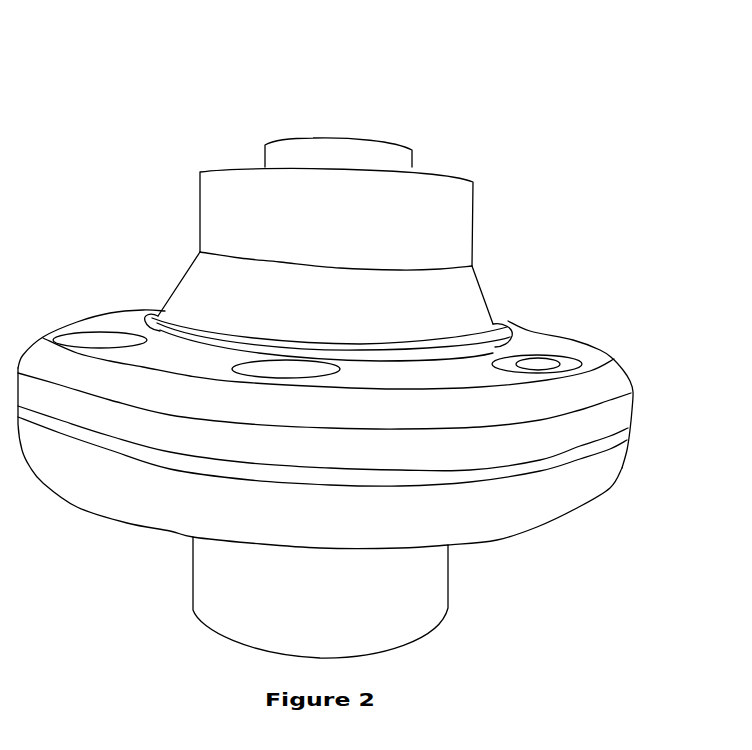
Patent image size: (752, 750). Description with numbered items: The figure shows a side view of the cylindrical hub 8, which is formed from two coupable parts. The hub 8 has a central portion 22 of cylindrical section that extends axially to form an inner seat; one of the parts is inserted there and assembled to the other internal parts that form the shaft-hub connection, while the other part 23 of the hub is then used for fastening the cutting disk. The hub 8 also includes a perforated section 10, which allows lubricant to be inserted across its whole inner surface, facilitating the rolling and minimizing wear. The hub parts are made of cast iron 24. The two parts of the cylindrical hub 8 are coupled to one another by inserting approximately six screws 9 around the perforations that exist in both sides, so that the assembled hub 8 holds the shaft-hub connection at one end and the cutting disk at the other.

The cylindrical hub 8 is at (500, 236).
The screws 9 is at (546, 356).
The perforated section 10 is at (89, 338).
The central portion 22 is at (393, 124).
The other part of the hub 23 is at (488, 537).
The cast iron 24 is at (612, 485).